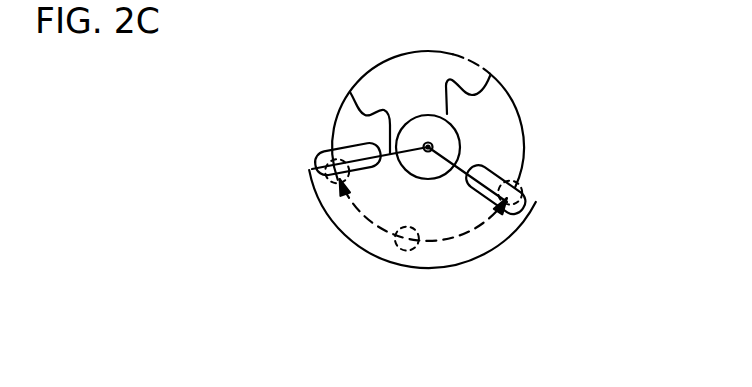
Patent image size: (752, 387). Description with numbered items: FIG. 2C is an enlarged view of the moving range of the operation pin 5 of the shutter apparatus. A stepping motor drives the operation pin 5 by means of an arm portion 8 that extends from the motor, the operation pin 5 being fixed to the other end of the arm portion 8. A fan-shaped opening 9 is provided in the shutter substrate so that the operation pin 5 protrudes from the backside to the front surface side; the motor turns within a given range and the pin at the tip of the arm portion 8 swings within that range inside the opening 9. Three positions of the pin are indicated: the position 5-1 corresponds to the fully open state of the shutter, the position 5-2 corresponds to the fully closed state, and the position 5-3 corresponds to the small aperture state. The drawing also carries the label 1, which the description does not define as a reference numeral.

The rotary disk 1 is at (490, 76).
The arm portion 8 is at (352, 101).
The operation pin 5 is at (403, 229).
The position of operation pin (fully open state) 5-1 is at (550, 227).
The position of operation pin (fully closed state) 5-2 is at (395, 290).
The position of operation pin (small aperture state) 5-3 is at (277, 186).
The opening 9 is at (313, 171).